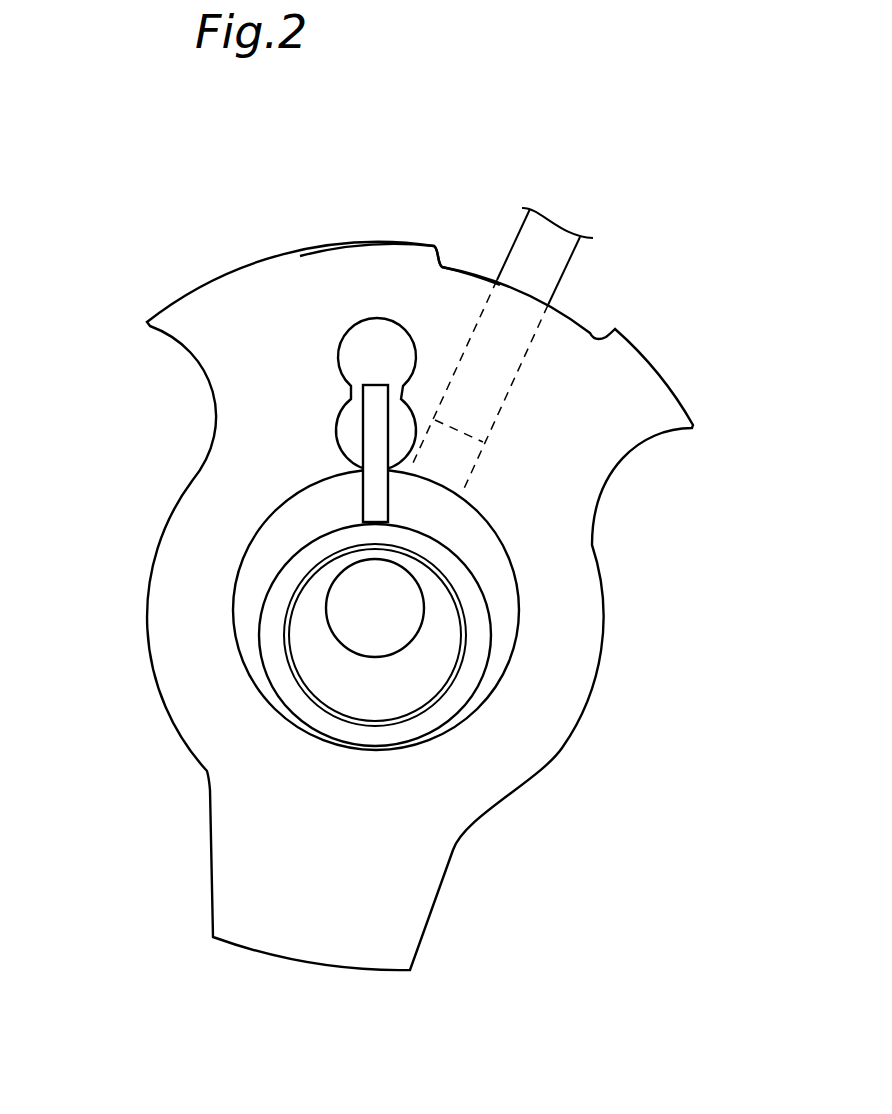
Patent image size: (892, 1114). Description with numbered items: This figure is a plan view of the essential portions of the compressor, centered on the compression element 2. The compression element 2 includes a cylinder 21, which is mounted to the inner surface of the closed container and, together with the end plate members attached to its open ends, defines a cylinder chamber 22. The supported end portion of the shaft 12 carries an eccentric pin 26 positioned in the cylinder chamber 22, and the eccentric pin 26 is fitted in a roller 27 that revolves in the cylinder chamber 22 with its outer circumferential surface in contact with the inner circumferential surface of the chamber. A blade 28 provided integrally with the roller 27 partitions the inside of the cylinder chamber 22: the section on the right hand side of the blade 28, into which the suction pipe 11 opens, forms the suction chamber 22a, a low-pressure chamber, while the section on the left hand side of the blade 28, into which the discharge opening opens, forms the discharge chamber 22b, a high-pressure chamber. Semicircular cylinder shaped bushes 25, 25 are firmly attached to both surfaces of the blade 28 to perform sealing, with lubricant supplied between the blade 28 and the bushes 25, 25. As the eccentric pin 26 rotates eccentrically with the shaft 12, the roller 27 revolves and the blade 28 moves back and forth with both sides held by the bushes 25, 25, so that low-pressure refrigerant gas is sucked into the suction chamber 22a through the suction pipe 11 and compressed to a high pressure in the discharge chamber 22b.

The compression element 2 is at (183, 292).
The cylinder 21 is at (356, 273).
The suction pipe 11 is at (528, 262).
The cylinder chamber 22 is at (313, 486).
The suction chamber 22a is at (502, 640).
The discharge chamber 22b is at (243, 625).
The bushes 25 is at (347, 427).
The eccentric pin 26 is at (407, 697).
The roller 27 is at (455, 568).
The blade 28 is at (389, 500).
The shaft 12 is at (405, 627).